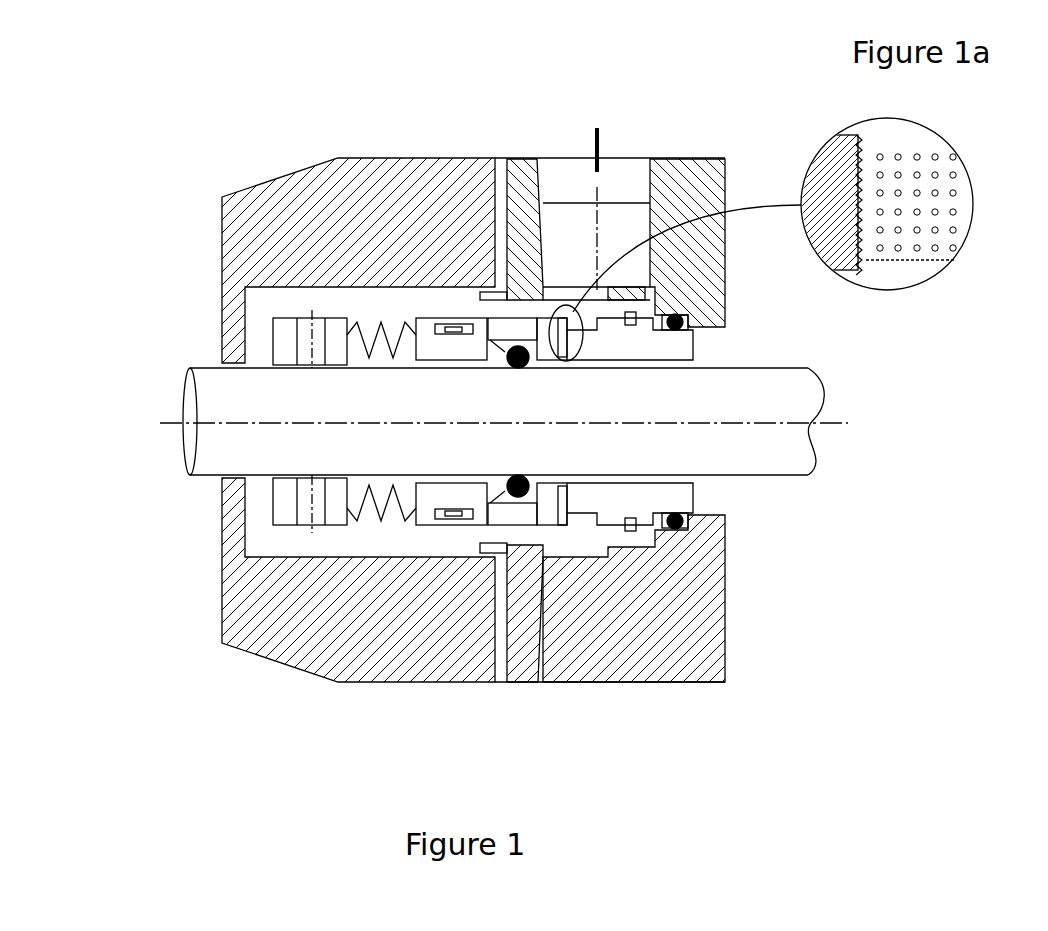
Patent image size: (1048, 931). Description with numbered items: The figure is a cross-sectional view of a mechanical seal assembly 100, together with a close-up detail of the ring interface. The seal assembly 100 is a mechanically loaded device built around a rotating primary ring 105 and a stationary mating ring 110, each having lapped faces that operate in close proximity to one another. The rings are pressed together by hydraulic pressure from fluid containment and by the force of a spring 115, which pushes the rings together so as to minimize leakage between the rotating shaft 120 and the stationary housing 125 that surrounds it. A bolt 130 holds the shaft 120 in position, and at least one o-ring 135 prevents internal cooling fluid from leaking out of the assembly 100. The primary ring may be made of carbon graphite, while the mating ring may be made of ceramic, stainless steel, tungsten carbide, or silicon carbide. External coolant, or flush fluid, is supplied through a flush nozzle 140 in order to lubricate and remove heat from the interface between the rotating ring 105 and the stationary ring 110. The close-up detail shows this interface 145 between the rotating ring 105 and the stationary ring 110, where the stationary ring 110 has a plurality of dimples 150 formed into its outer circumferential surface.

In FIG. 1, the mechanical seal assembly 100 is at (358, 134).
In FIG. 1, the rotating (primary) ring 105 is at (552, 358).
In FIG. 1A, the rotating (primary) ring 105 is at (846, 152).
In FIG. 1, the stationary (mating) ring 110 is at (672, 348).
In FIG. 1A, the stationary (mating) ring 110 is at (940, 178).
In FIG. 1, the spring 115 is at (365, 512).
In FIG. 1, the rotating shaft 120 is at (195, 402).
In FIG. 1, the stationary housing 125 is at (252, 247).
In FIG. 1, the bolt 130 is at (285, 513).
In FIG. 1, the o-ring 135 is at (683, 527).
In FIG. 1, the flush nozzle 140 is at (602, 388).
In FIG. 1A, the interface 145 is at (863, 258).
In FIG. 1A, the dimples 150 is at (933, 225).